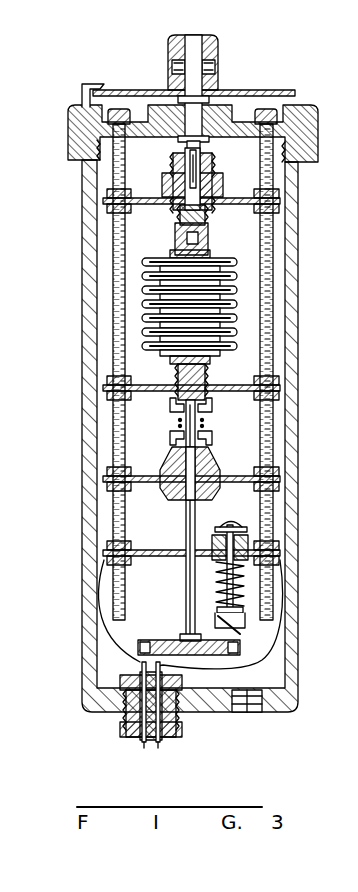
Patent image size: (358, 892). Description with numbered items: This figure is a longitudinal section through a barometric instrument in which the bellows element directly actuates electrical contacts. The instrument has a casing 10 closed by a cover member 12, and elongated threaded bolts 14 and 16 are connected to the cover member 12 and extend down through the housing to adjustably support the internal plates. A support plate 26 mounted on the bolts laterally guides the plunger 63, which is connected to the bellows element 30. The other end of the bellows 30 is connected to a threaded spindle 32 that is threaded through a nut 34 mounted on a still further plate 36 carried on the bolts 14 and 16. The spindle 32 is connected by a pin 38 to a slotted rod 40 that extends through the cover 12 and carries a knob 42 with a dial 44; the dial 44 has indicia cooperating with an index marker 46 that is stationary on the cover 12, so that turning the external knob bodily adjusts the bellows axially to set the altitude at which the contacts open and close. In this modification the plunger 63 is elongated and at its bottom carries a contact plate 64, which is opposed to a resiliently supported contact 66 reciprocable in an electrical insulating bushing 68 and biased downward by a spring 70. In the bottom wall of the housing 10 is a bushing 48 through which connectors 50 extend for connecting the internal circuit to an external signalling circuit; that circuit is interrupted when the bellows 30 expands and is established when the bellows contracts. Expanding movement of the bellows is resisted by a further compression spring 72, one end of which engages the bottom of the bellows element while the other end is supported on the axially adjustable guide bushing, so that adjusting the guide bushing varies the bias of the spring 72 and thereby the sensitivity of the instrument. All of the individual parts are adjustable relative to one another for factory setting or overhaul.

The casing 10 is at (295, 352).
The cover member 12 is at (312, 138).
The elongated threaded bolt 14 is at (274, 290).
The elongated threaded bolt 16 is at (113, 282).
The support plate 26 is at (278, 390).
The bellows element 30 is at (232, 335).
The threaded spindle 32 is at (206, 205).
The nut 34 is at (213, 178).
The plate 36 is at (274, 200).
The pin 38 is at (186, 160).
The slotted rod 40 is at (203, 66).
The knob 42 is at (217, 52).
The dial 44 is at (145, 90).
The index marker 46 is at (90, 82).
The bushing 48 is at (170, 738).
The connectors 50 is at (146, 742).
The plunger 63 is at (186, 523).
The contact plate 64 is at (148, 640).
The resiliently supported contact 66 is at (236, 626).
The electrical insulating bushing 68 is at (245, 525).
The spring 70 is at (234, 600).
The compression spring 72 is at (200, 408).